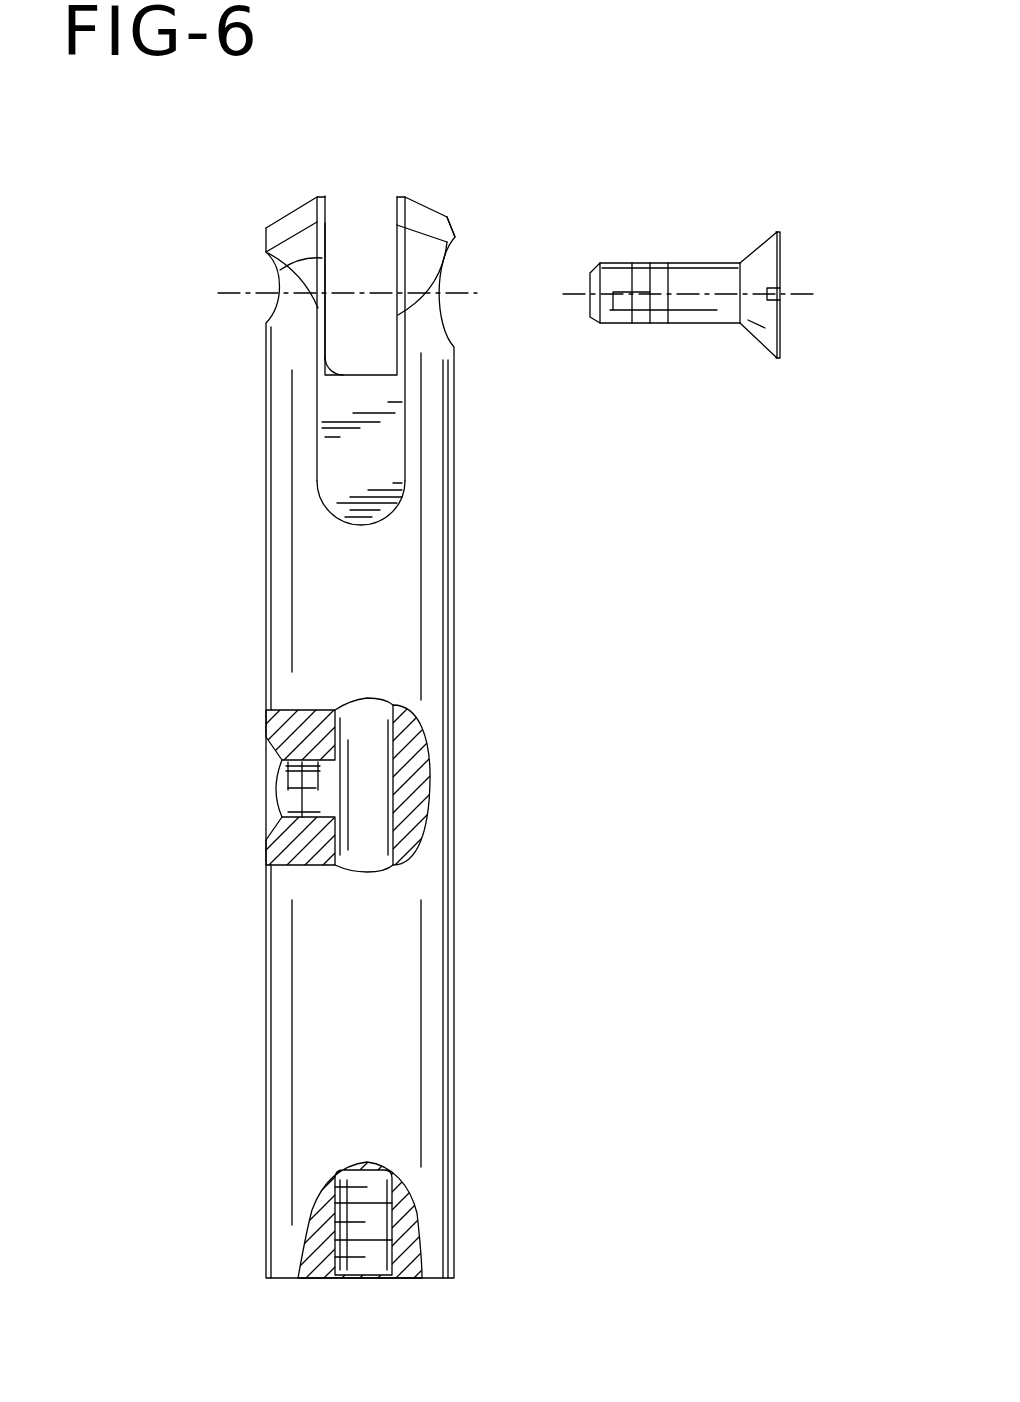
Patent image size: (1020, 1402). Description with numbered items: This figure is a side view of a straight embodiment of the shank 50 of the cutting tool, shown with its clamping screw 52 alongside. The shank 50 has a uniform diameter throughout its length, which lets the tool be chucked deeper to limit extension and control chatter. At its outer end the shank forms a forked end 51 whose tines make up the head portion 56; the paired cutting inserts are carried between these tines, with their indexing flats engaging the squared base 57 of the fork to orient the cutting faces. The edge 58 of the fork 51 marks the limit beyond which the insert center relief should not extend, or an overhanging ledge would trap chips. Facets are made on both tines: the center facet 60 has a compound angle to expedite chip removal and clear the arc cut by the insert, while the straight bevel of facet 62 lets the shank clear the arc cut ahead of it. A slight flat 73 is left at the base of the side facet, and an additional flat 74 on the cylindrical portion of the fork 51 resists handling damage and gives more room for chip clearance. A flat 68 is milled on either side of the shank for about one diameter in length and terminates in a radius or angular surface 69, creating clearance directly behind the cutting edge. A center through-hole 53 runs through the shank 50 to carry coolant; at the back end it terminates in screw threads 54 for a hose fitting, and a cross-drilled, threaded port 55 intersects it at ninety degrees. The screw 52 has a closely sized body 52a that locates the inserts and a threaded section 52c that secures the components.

The shank 50 is at (358, 613).
The forked end 51 is at (397, 188).
The clamping screw 52 is at (760, 245).
The screw body 52a is at (677, 327).
The threaded section 52c is at (613, 265).
The center through-hole 53 is at (367, 747).
The screw threads 54 is at (378, 1280).
The port 55 is at (283, 783).
The head portion 56 is at (470, 208).
The squared base 57 is at (323, 360).
The edge of fork 58 is at (397, 214).
The center facet 60 is at (287, 228).
The facet 62 is at (448, 218).
The flat 68 is at (383, 447).
The angular surface 69 is at (383, 507).
The flat 73 is at (280, 270).
The flat 74 is at (320, 347).